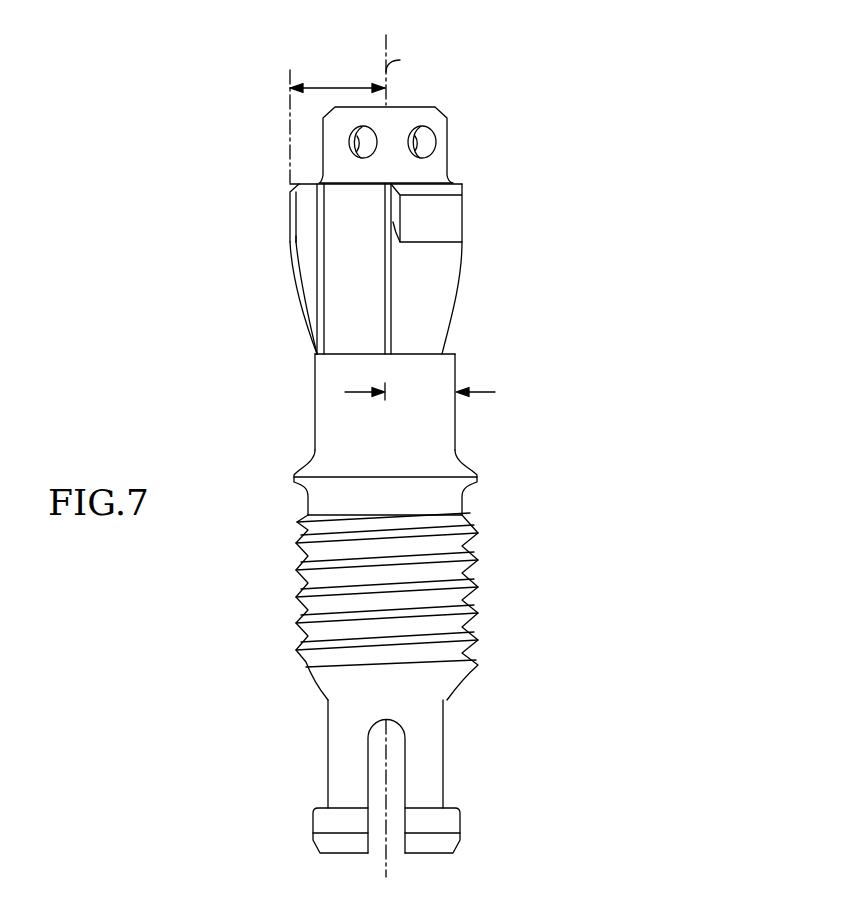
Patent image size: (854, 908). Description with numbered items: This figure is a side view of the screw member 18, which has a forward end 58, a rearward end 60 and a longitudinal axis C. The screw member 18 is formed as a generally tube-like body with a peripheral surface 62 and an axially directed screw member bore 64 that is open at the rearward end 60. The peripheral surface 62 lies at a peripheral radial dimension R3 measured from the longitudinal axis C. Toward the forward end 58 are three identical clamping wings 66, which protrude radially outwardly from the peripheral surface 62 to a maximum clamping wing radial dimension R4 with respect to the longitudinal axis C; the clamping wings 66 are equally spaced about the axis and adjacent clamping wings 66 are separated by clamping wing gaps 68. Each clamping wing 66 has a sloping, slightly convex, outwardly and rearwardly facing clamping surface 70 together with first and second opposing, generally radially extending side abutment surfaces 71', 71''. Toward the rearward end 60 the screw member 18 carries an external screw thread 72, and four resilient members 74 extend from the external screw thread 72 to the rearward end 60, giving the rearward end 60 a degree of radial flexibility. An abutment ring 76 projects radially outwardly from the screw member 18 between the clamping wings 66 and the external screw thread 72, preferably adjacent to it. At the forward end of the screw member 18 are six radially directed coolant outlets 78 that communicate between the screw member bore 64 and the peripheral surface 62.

The screw member 18 is at (635, 74).
The forward end 58 is at (520, 162).
The rearward end 60 is at (486, 803).
The peripheral surface 62 is at (440, 418).
The screw member bore 64 is at (378, 732).
The clamping wing 66 is at (282, 208).
The clamping wing gap 68 is at (350, 300).
The clamping surface 70 is at (300, 290).
The first side abutment surface 71' is at (492, 244).
The second side abutment surface 71'' is at (261, 256).
The external screw thread 72 is at (478, 580).
The resilient member 74 is at (327, 755).
The abutment ring 76 is at (303, 468).
The coolant outlet 78 is at (351, 133).
The peripheral radial dimension R3 is at (437, 392).
The maximum clamping wing radial dimension R4 is at (337, 123).
The longitudinal axis C is at (399, 52).